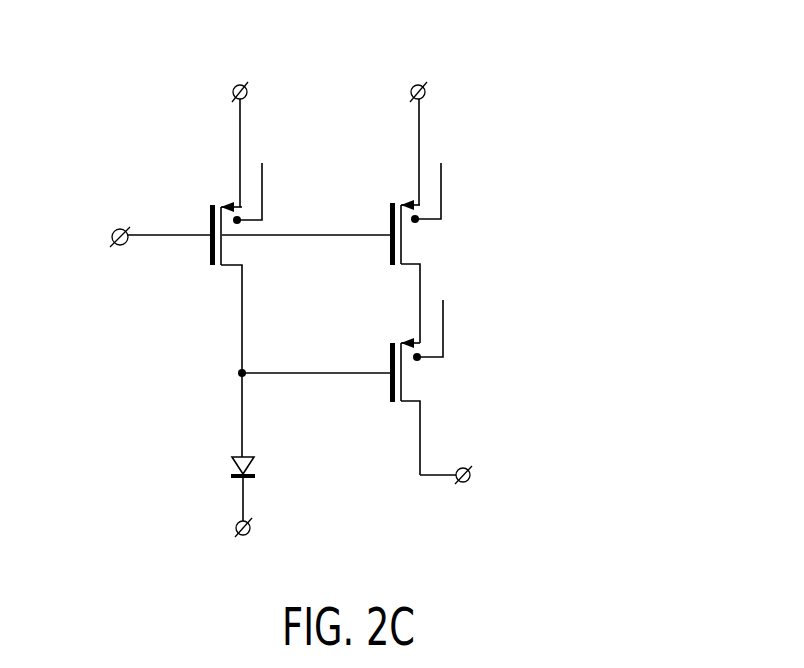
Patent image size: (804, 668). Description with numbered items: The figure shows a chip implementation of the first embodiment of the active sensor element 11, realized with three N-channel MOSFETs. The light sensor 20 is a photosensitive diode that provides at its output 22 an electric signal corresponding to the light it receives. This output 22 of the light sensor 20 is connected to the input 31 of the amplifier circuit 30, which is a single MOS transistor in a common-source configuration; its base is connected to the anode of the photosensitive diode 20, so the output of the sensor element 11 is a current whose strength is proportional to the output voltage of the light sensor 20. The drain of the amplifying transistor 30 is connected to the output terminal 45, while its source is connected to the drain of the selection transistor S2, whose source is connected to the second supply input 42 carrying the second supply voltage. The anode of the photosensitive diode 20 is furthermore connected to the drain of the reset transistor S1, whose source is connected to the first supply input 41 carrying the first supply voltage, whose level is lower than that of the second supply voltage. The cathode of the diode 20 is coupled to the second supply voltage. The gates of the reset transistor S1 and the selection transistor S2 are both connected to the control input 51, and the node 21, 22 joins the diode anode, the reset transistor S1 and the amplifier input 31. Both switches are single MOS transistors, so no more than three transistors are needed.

The sensor element 11 is at (555, 85).
The light sensor 20 is at (232, 463).
The node 21 is at (276, 413).
The output of the light sensor 22 is at (240, 404).
The amplifier circuit 30 is at (388, 393).
The input of the amplifier circuit 31 is at (388, 369).
The first supply input 41 is at (238, 77).
The second supply input 42 is at (417, 75).
The output terminal 45 is at (471, 477).
The control input 51 is at (110, 235).
The reset transistor S1 is at (208, 257).
The selection transistor S2 is at (385, 255).